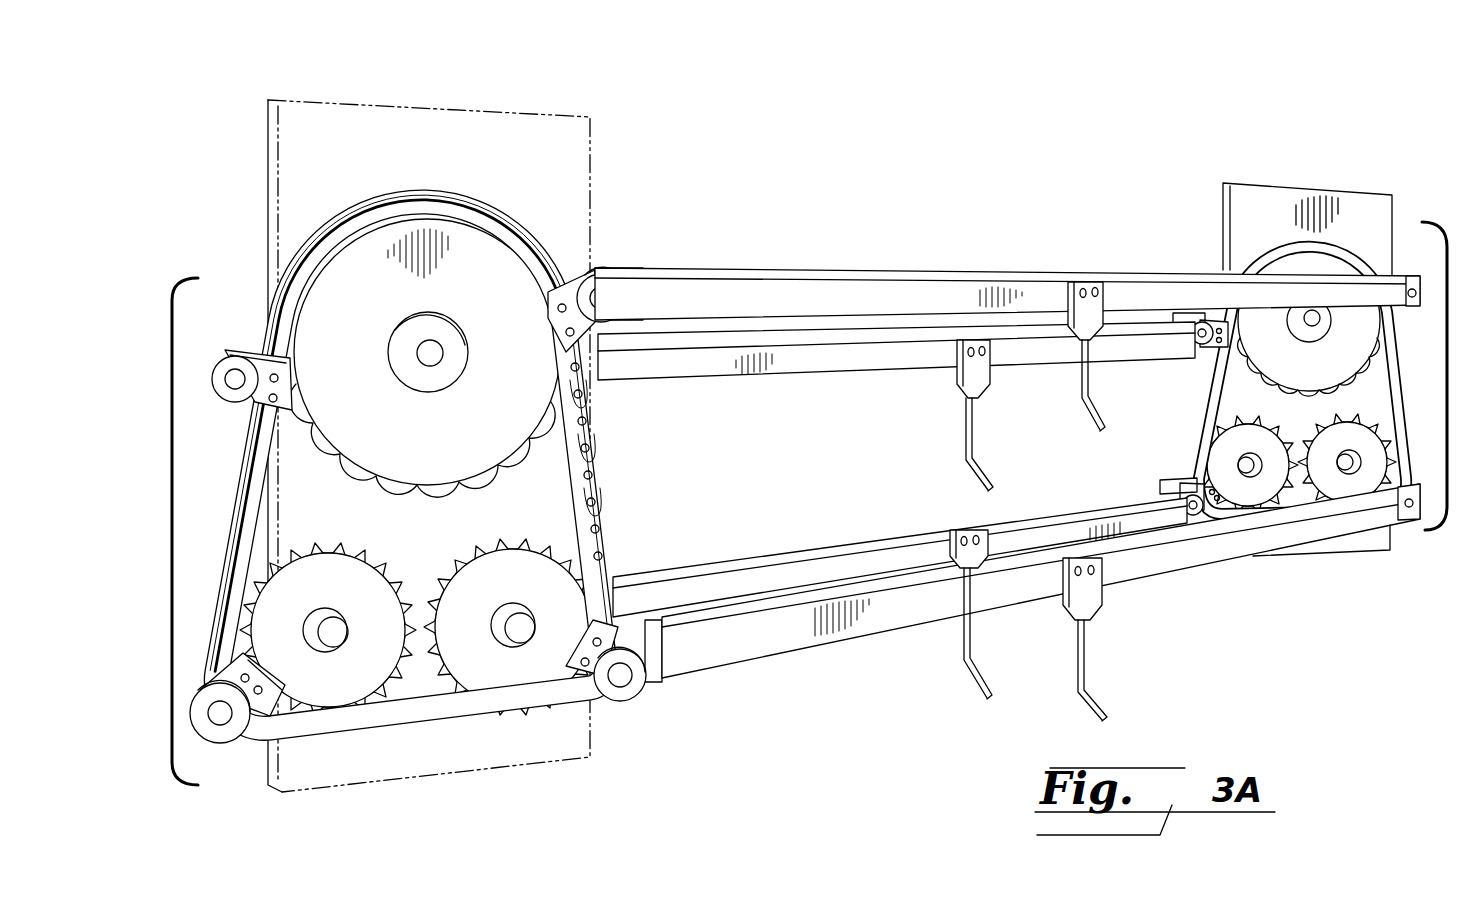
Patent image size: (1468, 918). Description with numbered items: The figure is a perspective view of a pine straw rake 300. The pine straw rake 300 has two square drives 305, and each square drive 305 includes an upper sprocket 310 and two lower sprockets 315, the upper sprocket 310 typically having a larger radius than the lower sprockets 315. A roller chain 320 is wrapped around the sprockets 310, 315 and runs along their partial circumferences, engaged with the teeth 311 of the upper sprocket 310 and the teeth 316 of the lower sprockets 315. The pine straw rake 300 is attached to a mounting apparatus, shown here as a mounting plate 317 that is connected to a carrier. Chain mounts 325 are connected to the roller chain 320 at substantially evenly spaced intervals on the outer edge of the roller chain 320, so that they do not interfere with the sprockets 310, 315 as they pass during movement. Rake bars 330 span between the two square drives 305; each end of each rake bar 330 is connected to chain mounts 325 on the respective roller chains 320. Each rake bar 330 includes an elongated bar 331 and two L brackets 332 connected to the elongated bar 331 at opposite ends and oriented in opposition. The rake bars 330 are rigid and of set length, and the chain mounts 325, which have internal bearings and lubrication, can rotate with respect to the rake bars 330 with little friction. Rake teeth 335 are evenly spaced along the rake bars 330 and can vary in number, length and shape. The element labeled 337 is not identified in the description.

The pine straw rake 300 is at (451, 86).
The square drive 305 is at (172, 441).
The upper sprocket 310 is at (448, 436).
The teeth 311 is at (593, 448).
The lower sprocket 315 is at (352, 682).
The teeth 316 is at (607, 522).
The mounting plate 317 is at (596, 100).
The roller chain 320 is at (596, 430).
The chain mount 325 is at (228, 352).
The rake bar 330 is at (1007, 478).
The elongated bar 331 is at (948, 290).
The L bracket 332 is at (640, 268).
The rake teeth 335 is at (964, 418).
The guide plate 337 is at (1405, 532).